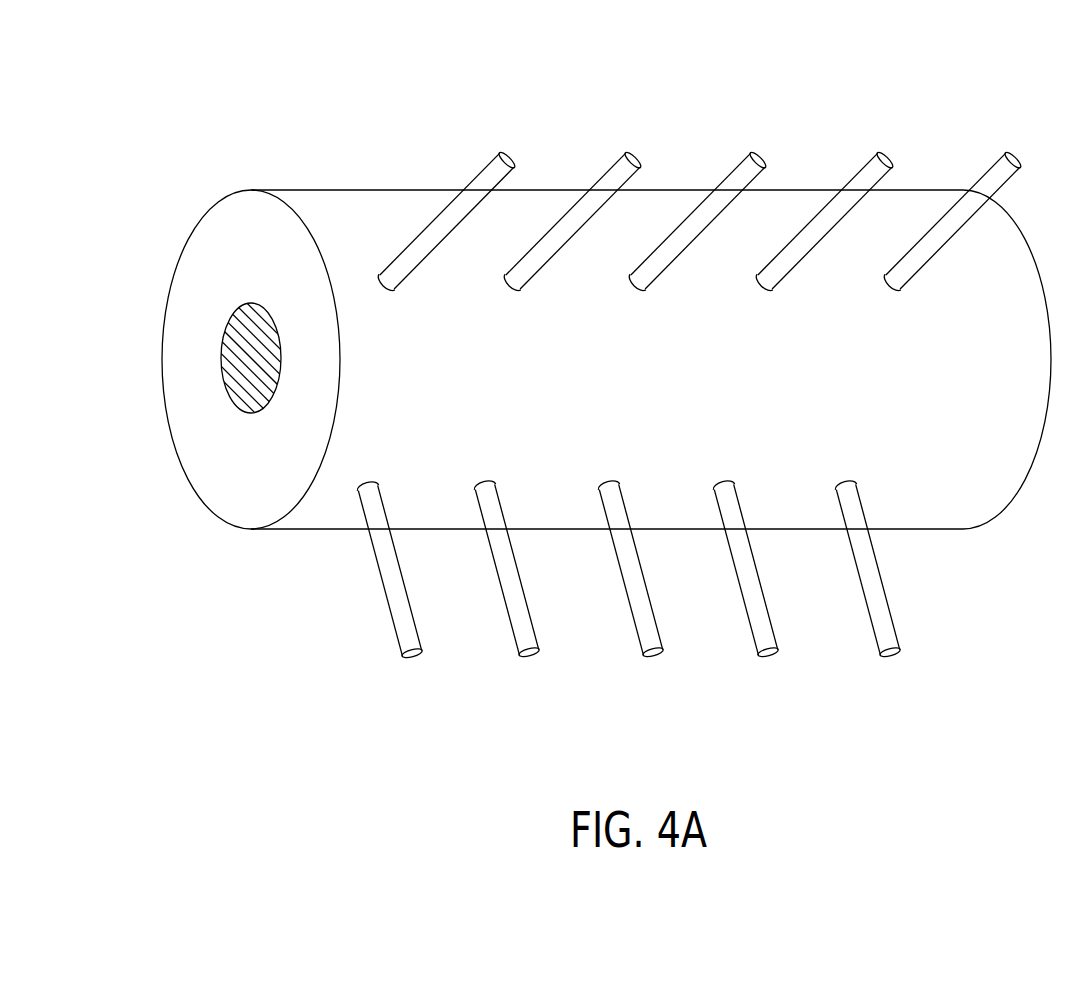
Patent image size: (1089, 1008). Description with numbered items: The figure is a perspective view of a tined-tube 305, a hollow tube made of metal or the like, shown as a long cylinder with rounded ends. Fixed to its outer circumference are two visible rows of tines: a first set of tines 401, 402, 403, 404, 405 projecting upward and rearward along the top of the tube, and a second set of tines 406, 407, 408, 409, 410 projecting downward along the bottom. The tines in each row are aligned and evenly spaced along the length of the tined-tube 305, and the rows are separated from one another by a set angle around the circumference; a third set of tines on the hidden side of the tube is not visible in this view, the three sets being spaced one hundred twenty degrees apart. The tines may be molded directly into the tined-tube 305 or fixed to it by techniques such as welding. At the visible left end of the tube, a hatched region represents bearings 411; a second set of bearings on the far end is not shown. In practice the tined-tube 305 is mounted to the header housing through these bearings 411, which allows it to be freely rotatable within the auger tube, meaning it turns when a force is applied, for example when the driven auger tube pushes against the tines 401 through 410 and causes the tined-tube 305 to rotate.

The tined-tube 305 is at (600, 383).
The tine 401 is at (514, 149).
The tine 402 is at (640, 149).
The tine 403 is at (764, 149).
The tine 404 is at (891, 149).
The tine 405 is at (1019, 149).
The tine 406 is at (421, 662).
The tine 407 is at (537, 661).
The tine 408 is at (662, 660).
The tine 409 is at (776, 657).
The tine 410 is at (899, 657).
The bearings 411 is at (250, 393).